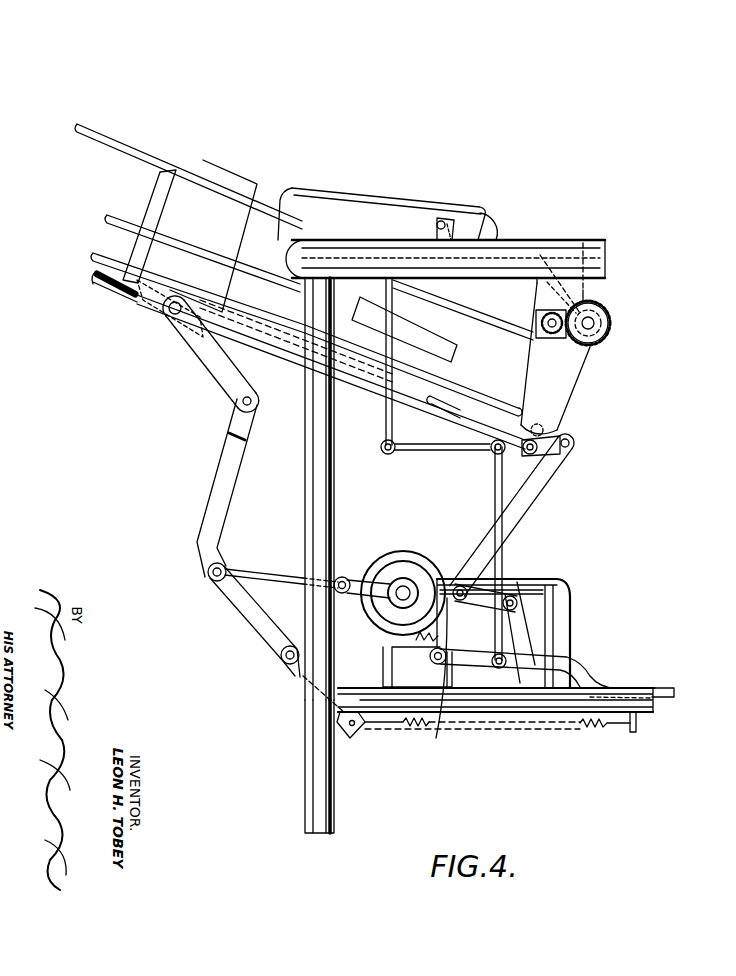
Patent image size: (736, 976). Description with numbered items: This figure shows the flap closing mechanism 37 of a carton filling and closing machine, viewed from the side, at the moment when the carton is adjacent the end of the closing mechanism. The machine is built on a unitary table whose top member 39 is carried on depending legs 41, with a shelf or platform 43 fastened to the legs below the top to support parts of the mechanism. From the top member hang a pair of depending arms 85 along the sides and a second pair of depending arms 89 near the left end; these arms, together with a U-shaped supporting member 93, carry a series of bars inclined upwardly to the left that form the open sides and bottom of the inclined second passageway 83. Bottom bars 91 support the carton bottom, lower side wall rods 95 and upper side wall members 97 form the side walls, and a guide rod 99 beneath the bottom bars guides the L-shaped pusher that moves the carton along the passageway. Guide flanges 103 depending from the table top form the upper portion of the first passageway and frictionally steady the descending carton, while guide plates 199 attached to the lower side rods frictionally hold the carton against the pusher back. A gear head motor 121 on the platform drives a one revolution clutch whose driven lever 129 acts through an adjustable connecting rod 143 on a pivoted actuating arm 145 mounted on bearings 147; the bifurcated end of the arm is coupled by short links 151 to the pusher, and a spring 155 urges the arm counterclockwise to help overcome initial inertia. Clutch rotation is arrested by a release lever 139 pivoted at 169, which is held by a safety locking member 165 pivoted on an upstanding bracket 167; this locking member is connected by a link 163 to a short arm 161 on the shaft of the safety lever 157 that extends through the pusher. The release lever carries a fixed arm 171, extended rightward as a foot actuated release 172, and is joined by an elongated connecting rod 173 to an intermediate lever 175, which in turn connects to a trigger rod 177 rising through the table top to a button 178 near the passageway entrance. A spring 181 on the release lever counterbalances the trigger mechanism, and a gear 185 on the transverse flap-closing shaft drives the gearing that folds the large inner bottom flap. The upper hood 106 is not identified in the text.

The flap closing mechanism 37 is at (348, 473).
The top member 39 is at (560, 240).
The legs 41 is at (327, 781).
The shelf or platform 43 is at (654, 709).
The second chute or passageway 83 is at (113, 237).
The depending arms 85 is at (566, 388).
The depending arms 89 is at (296, 281).
The elongated members or bars 91 is at (288, 338).
The U-shaped supporting member 93 is at (160, 198).
The side wall members or rods 95 is at (118, 219).
The side wall members 97 is at (150, 156).
The guide rod 99 is at (292, 362).
The guide flanges or plates 103 is at (513, 294).
The hood 106 is at (392, 196).
The gear head motor 121 is at (529, 578).
The driven lever 129 is at (352, 580).
The trip or release lever 139 is at (432, 650).
The adjustable connecting rod 143 is at (265, 575).
The actuating arm 145 is at (252, 618).
The bearings 147 is at (287, 664).
The short links 151 is at (218, 370).
The spring 155 is at (496, 724).
The safety lever 157 is at (490, 398).
The short arm 161 is at (558, 434).
The link 163 is at (533, 496).
The safety locking member 165 is at (451, 586).
The upstanding bracket 167 is at (520, 638).
The pivot 169 is at (433, 732).
The fixed arm 171 is at (578, 668).
The foot actuated release 172 is at (657, 687).
The elongated connecting rod 173 is at (492, 490).
The intermediate lever 175 is at (418, 450).
The trigger or release rod 177 is at (387, 300).
The button 178 is at (388, 238).
The spring 181 is at (414, 646).
The gear 185 is at (608, 322).
The guide plates 199 is at (450, 351).